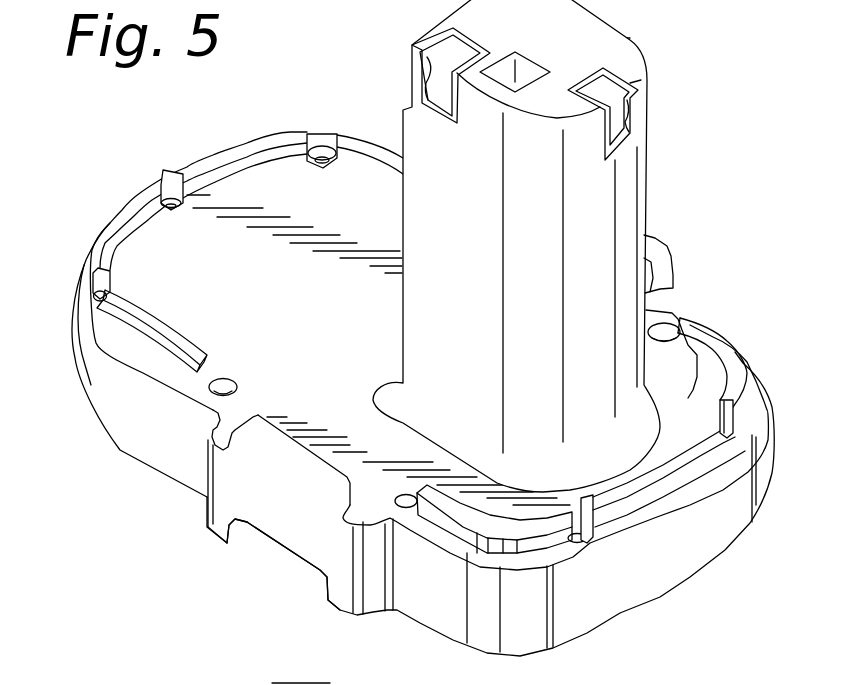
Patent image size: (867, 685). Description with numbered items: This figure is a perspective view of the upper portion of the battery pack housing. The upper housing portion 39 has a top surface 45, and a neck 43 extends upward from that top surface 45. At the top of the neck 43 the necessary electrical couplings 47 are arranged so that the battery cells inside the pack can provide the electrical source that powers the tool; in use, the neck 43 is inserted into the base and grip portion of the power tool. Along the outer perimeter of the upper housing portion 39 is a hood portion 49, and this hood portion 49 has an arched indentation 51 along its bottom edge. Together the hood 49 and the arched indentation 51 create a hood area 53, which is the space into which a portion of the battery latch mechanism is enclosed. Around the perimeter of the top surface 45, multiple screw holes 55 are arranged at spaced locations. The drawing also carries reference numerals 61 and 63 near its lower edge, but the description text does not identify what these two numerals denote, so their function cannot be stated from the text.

The upper housing portion 39 is at (107, 405).
The neck 43 is at (647, 187).
The top surface 45 is at (262, 294).
The electrical couplings 47 is at (437, 52).
The hood portion 49 is at (337, 590).
The arched indentation 51 is at (255, 535).
The hood area 53 is at (280, 557).
The screw holes 55 is at (166, 190).
The contact 61 is at (377, 677).
The contact 63 is at (222, 683).